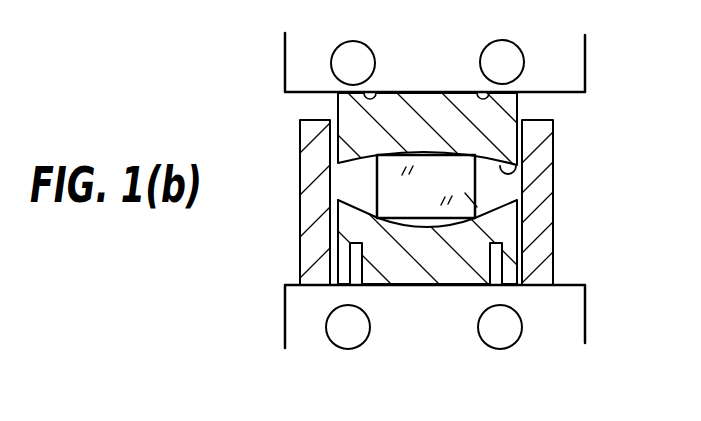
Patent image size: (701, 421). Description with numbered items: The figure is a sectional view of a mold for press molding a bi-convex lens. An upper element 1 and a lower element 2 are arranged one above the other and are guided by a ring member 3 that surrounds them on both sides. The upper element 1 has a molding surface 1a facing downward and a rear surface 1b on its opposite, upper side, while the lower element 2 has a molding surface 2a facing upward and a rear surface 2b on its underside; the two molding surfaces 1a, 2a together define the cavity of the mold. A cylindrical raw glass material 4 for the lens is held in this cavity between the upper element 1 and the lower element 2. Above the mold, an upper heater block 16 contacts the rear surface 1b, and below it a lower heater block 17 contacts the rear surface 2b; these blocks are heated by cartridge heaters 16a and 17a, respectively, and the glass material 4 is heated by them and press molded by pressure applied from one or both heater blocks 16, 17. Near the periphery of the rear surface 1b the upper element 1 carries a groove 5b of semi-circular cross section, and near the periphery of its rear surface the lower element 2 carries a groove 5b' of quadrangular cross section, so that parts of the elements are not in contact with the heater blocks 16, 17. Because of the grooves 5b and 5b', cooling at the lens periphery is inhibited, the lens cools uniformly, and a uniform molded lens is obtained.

The upper element 1 is at (518, 108).
The molding surface 1a is at (518, 167).
The rear surface 1b is at (432, 92).
The lower element 2 is at (503, 222).
The molding surface 2a is at (362, 207).
The rear surface 2b is at (422, 288).
The ring member 3 is at (535, 228).
The raw glass material 4 is at (478, 196).
The groove 5b is at (426, 56).
The groove 5b' is at (426, 317).
The upper heater block 16 is at (457, 62).
The cartridge heater 16a is at (518, 52).
The lower heater block 17 is at (587, 294).
The cartridge heater 17a is at (522, 328).